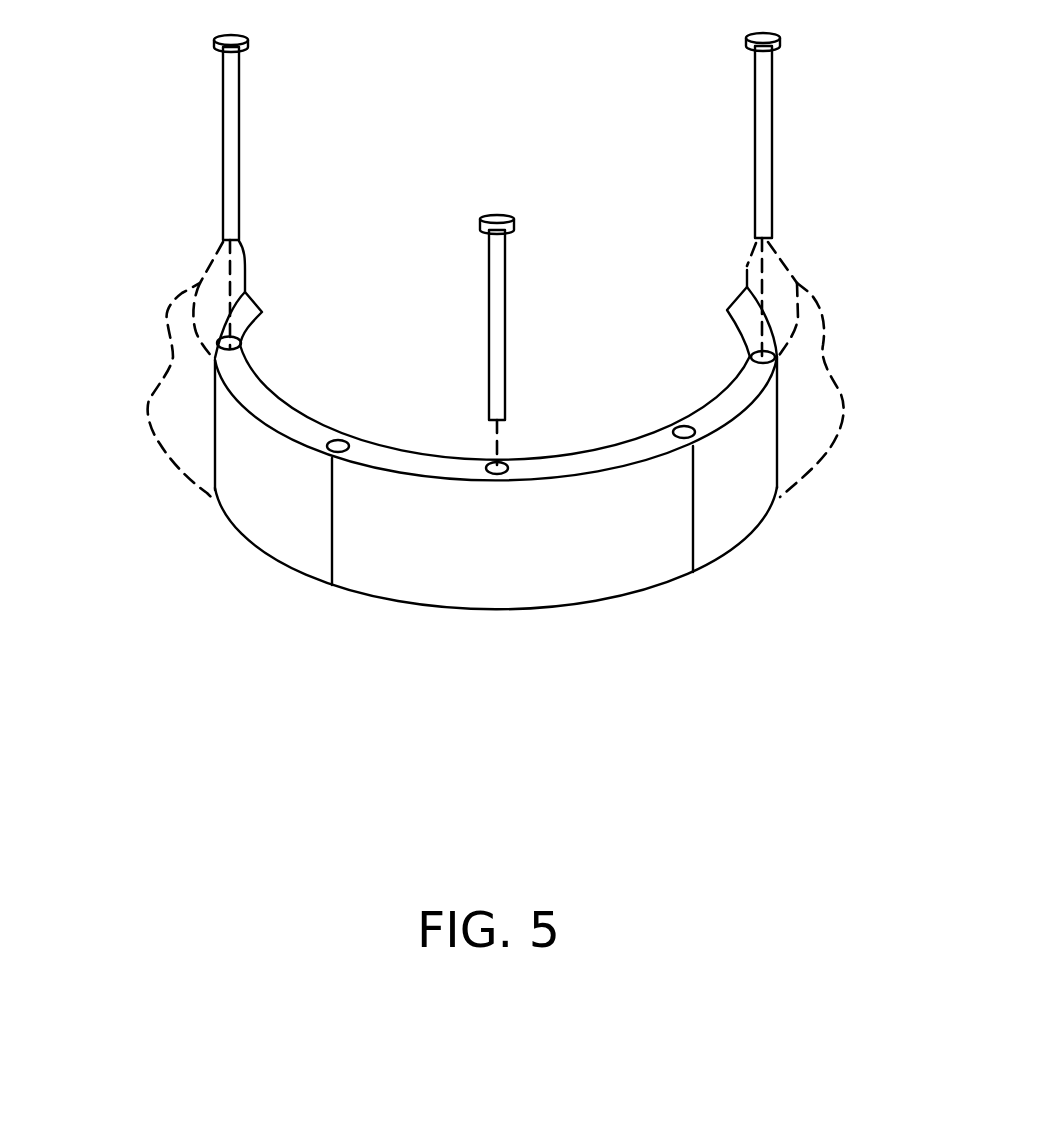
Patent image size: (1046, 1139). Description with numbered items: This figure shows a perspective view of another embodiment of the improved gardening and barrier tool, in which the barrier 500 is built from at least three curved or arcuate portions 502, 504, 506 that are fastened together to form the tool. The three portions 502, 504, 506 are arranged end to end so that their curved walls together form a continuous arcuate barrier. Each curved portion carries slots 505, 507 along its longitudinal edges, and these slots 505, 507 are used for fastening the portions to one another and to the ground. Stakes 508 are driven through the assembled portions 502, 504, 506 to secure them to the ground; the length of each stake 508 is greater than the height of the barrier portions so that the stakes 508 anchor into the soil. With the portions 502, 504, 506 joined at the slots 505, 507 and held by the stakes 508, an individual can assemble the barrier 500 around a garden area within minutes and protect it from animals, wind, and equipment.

The barrier 500 is at (175, 177).
The curved portion 502 is at (738, 516).
The curved portion 504 is at (500, 580).
The slot 505 is at (328, 562).
The curved portion 506 is at (268, 525).
The slot 507 is at (695, 550).
The stake 508 is at (232, 125).